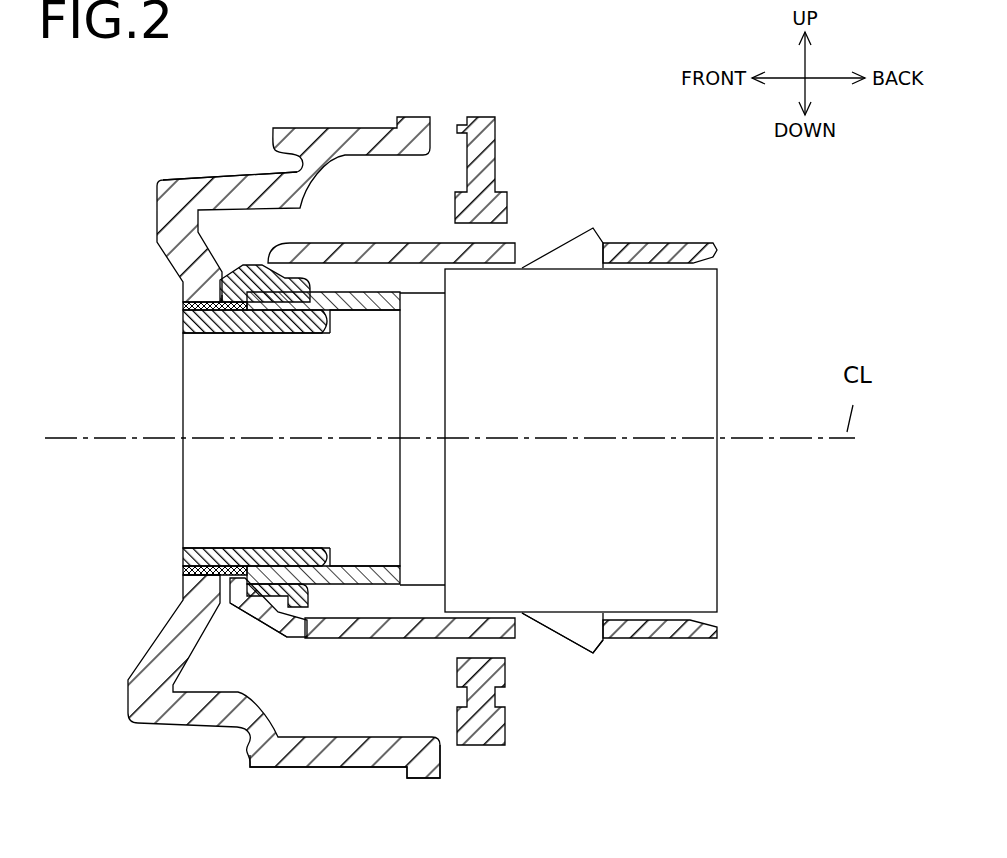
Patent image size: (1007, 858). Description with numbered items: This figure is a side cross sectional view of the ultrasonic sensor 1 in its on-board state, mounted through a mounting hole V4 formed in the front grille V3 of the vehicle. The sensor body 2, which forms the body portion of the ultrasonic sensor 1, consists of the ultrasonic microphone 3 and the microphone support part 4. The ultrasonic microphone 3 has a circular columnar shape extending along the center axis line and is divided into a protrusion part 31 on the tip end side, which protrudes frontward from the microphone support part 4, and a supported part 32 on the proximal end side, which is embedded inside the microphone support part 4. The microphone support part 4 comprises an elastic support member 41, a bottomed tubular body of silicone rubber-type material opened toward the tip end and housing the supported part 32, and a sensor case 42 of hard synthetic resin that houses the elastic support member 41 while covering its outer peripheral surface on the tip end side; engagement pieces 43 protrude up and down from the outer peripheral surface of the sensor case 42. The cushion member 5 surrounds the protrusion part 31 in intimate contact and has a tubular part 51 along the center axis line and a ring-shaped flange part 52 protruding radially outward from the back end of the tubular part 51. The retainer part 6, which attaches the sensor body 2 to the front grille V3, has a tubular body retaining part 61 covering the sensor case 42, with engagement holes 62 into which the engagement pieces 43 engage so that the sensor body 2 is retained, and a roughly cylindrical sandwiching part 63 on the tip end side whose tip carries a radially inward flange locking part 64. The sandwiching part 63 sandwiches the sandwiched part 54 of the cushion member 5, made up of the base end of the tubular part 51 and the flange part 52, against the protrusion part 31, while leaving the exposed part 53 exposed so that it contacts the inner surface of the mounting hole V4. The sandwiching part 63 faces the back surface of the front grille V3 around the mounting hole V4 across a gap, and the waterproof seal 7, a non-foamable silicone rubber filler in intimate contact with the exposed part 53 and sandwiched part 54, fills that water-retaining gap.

The ultrasonic sensor 1 is at (768, 692).
The sensor body 2 is at (399, 599).
The ultrasonic microphone 3 is at (253, 321).
The protrusion part 31 is at (197, 409).
The supported part 32 is at (310, 348).
The microphone support part 4 is at (526, 365).
The elastic support member 41 is at (373, 325).
The sensor case 42 is at (702, 302).
The engagement pieces 43 is at (585, 248).
The cushion member 5 is at (217, 367).
The tubular part 51 is at (190, 328).
The flange part 52 is at (259, 298).
The exposed part 53 is at (220, 578).
The sandwiched part 54 is at (240, 558).
The retainer part 6 is at (636, 441).
The body retaining part 61 is at (674, 636).
The engagement holes 62 is at (606, 642).
The waterproof seal 7 is at (321, 640).
The sandwiching part 63 is at (257, 612).
The flange locking part 64 is at (230, 338).
The front grille V3 is at (170, 178).
The mounting holes V4 is at (190, 577).